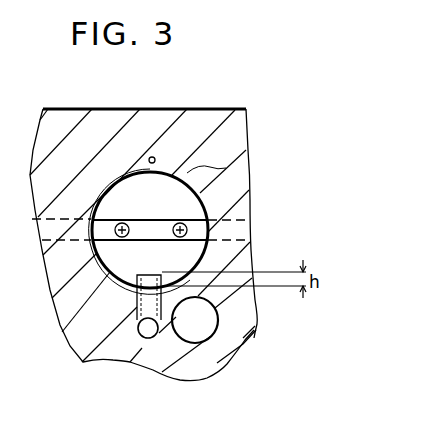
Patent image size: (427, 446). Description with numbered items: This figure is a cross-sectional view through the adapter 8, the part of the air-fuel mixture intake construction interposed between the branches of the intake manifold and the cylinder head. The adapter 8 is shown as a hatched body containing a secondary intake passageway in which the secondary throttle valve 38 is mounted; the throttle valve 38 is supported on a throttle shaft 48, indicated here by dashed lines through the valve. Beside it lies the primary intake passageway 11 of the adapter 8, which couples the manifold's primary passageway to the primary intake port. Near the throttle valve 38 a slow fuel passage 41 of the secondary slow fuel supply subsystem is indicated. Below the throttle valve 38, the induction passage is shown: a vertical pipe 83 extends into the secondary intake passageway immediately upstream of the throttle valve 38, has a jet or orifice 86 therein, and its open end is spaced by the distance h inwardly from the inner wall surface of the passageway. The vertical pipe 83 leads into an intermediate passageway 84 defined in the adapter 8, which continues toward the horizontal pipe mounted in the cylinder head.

The adapter 8 is at (229, 93).
The primary intake passageway 11 is at (207, 318).
The secondary throttle valve 38 is at (177, 187).
The slow fuel passage 41 is at (155, 158).
The throttle shaft 48 is at (250, 231).
The vertical pipe 83 is at (137, 303).
The intermediate passageway 84 is at (148, 330).
The jet or orifice 86 is at (148, 275).